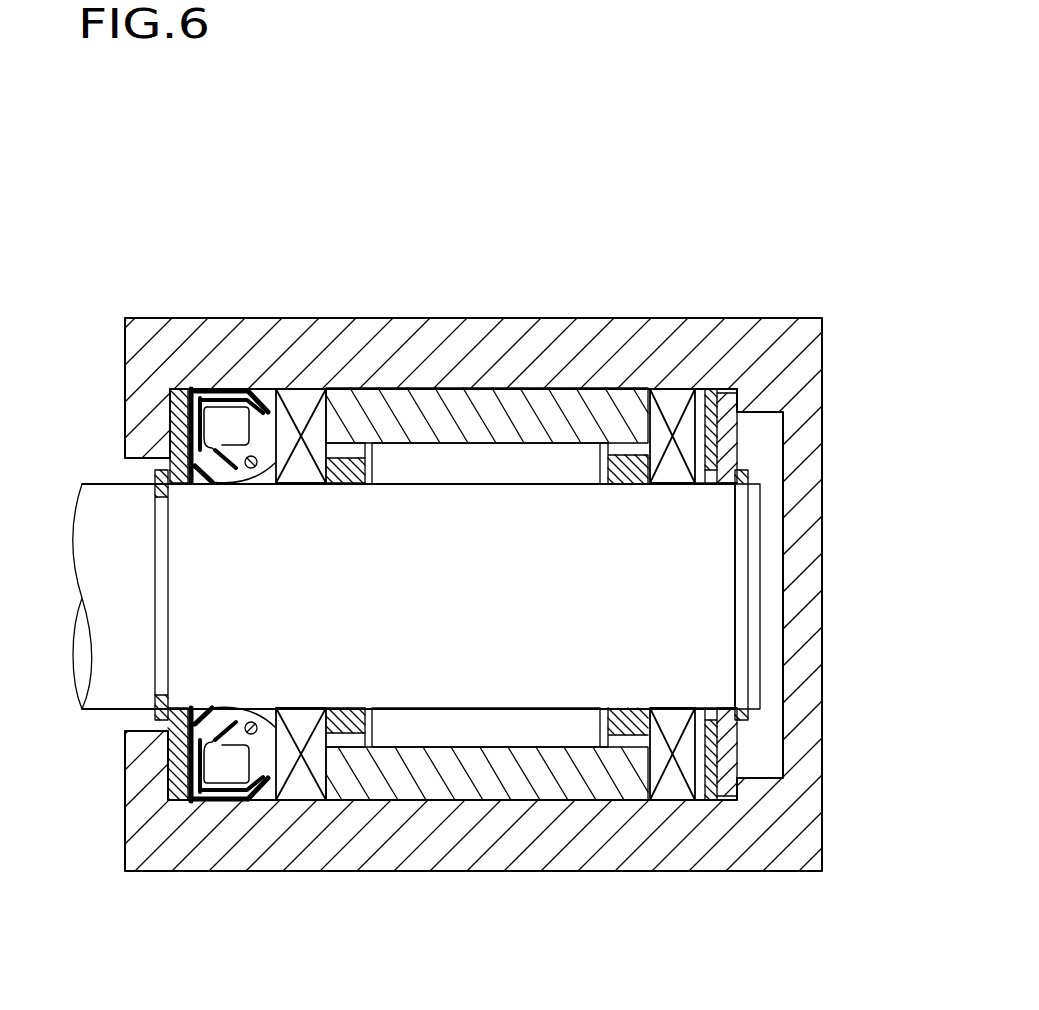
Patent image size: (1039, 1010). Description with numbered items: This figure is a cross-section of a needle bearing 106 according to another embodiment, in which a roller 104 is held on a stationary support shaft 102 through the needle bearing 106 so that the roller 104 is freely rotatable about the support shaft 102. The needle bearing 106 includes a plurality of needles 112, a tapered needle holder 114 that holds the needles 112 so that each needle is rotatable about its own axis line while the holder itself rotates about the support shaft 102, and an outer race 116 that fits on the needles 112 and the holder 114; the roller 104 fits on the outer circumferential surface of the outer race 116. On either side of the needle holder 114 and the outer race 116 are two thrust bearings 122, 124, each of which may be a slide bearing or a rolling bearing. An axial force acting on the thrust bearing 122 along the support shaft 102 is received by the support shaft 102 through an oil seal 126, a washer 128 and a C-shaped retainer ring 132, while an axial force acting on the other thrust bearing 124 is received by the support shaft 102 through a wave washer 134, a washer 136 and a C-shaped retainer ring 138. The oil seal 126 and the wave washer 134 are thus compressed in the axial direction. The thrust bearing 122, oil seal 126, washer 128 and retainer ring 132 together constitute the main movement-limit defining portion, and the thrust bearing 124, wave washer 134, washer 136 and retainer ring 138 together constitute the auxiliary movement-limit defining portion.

The support shaft 102 is at (85, 494).
The roller 104 is at (562, 340).
The needle bearing 106 is at (589, 380).
The needles 112 is at (410, 460).
The tapered needle holder 114 is at (330, 460).
The outer race 116 is at (492, 415).
The thrust bearing 122 is at (300, 397).
The thrust bearing 124 is at (672, 397).
The oil seal 126 is at (218, 392).
The washer 128 is at (176, 433).
The C-shaped retainer ring 132 is at (160, 473).
The wave washer 134 is at (712, 398).
The washer 136 is at (742, 396).
The C-shaped retainer ring 138 is at (750, 468).